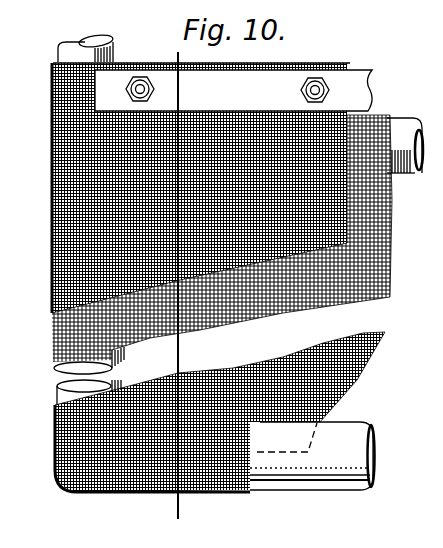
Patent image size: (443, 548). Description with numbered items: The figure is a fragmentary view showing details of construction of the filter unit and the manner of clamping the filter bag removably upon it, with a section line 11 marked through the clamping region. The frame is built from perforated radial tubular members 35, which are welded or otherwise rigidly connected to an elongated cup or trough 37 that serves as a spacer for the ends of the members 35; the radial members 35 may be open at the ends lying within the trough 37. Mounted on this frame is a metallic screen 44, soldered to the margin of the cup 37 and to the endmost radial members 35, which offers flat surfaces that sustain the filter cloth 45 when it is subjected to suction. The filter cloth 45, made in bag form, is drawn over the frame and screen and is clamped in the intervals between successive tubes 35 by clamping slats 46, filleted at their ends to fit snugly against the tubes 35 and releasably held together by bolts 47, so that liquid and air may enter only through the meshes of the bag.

The section line 11 is at (178, 52).
The radial tubular member 35 is at (114, 383).
The cup or trough 37 is at (338, 463).
The metallic screen 44 is at (277, 303).
The filter cloth 45 is at (53, 313).
The clamping slat 46 is at (233, 90).
The bolt 47 is at (319, 80).